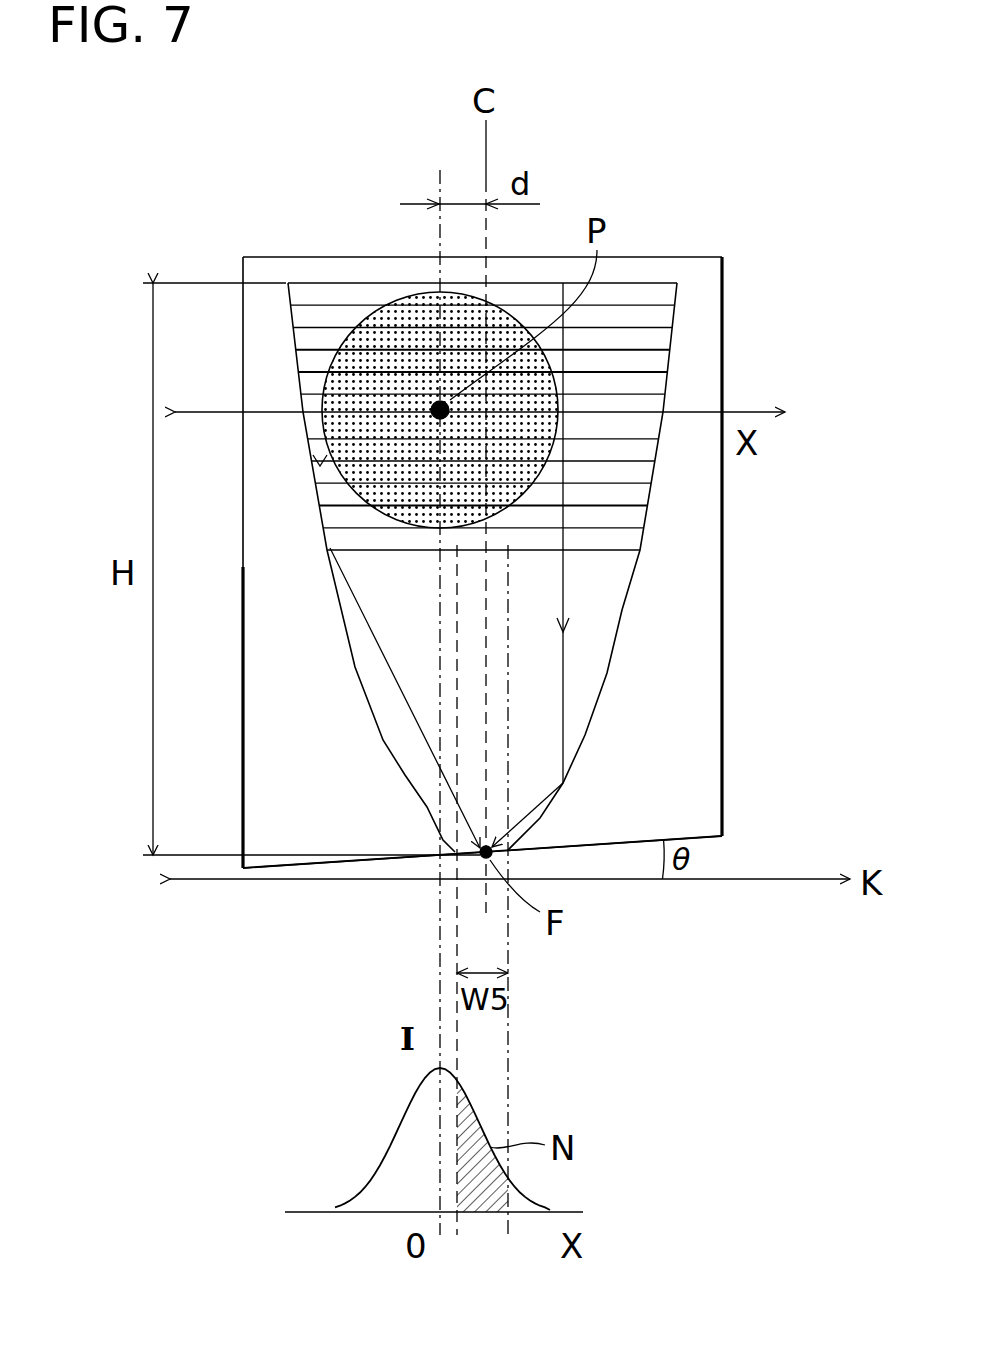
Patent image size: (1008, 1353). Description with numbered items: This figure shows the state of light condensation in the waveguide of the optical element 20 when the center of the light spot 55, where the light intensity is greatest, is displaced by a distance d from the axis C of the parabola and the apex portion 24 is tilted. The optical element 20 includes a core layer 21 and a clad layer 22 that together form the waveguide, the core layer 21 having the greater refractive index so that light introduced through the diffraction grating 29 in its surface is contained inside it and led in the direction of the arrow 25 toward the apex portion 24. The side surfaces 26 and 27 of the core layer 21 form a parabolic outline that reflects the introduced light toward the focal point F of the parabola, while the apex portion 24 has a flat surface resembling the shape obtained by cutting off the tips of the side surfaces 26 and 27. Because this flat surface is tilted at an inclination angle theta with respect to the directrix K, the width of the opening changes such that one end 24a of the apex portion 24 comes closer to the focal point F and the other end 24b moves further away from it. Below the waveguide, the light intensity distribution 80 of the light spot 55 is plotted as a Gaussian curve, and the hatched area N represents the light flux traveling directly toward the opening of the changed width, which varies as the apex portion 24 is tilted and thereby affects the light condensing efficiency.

The optical element 20 is at (509, 504).
The core layer 21 is at (491, 567).
The clad layer 22 is at (690, 530).
The apex portion 24 is at (482, 912).
The end of the opening of the apex portion 24a is at (455, 858).
The other end of the opening of the apex portion 24b is at (505, 856).
The arrow 25 is at (563, 722).
The side surface 26 is at (607, 673).
The side surface 27 is at (355, 667).
The diffraction grating 29 is at (665, 325).
The light spot 55 is at (372, 306).
The light intensity distribution 80 is at (395, 1122).